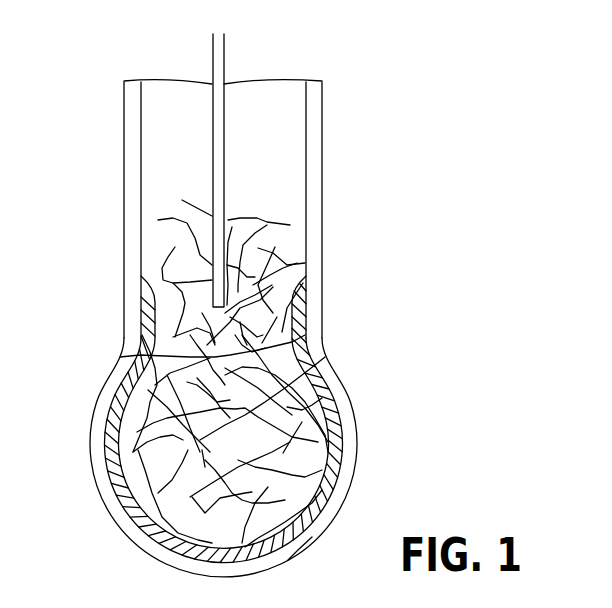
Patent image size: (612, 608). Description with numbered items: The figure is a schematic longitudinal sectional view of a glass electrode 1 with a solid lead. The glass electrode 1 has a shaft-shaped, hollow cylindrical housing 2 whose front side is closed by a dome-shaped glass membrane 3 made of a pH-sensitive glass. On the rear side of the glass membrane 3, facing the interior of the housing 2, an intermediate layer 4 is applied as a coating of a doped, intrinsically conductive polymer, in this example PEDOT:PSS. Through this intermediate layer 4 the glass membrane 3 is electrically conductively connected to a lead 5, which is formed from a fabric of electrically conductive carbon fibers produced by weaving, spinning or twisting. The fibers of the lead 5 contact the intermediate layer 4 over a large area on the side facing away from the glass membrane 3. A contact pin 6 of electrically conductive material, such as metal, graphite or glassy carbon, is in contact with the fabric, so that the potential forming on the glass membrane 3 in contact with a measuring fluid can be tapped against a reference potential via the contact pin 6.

The glass electrode 1 is at (466, 223).
The housing 2 is at (312, 150).
The glass membrane 3 is at (350, 483).
The intermediate layer 4 is at (337, 443).
The lead 5 is at (240, 360).
The contact pin 6 is at (213, 136).